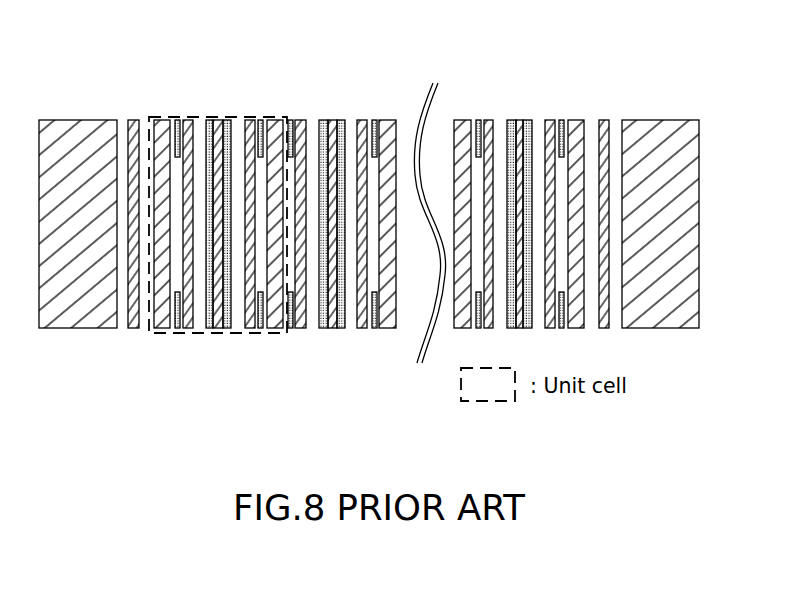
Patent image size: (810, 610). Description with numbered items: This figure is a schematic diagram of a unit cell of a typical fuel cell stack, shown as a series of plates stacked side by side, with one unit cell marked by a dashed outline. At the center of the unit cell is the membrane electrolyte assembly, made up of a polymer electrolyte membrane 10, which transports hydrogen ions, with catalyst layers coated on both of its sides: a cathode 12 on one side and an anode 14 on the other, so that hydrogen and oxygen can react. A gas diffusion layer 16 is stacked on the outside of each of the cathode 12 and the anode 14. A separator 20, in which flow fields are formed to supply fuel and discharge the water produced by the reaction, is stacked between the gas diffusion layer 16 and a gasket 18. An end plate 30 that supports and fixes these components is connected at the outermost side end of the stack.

The end plate 30 is at (80, 122).
The separator 20 is at (150, 335).
The gas diffusion layer 16 is at (187, 122).
The gasket 18 is at (178, 120).
The anode 14 is at (208, 328).
The polymer electrolyte membrane 10 is at (219, 328).
The cathode 12 is at (227, 328).